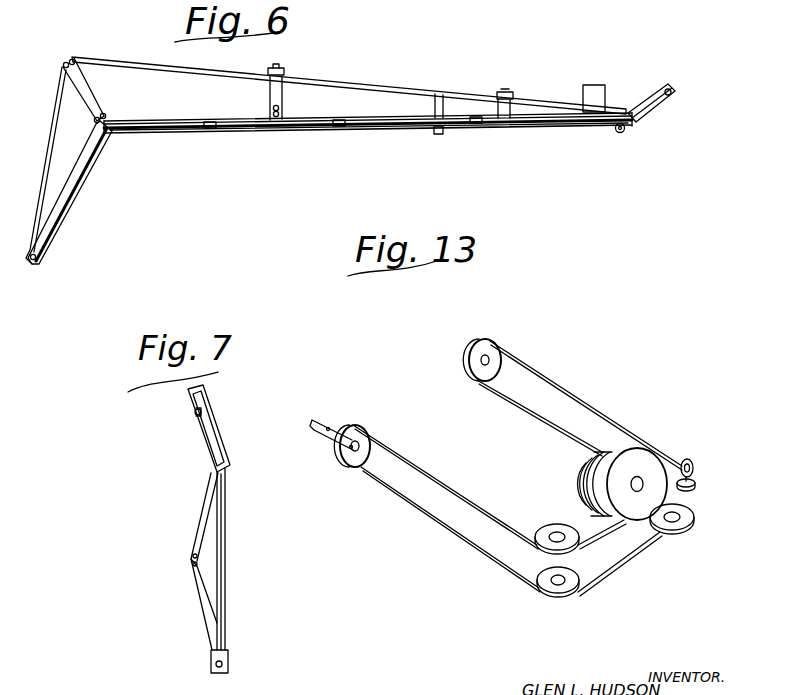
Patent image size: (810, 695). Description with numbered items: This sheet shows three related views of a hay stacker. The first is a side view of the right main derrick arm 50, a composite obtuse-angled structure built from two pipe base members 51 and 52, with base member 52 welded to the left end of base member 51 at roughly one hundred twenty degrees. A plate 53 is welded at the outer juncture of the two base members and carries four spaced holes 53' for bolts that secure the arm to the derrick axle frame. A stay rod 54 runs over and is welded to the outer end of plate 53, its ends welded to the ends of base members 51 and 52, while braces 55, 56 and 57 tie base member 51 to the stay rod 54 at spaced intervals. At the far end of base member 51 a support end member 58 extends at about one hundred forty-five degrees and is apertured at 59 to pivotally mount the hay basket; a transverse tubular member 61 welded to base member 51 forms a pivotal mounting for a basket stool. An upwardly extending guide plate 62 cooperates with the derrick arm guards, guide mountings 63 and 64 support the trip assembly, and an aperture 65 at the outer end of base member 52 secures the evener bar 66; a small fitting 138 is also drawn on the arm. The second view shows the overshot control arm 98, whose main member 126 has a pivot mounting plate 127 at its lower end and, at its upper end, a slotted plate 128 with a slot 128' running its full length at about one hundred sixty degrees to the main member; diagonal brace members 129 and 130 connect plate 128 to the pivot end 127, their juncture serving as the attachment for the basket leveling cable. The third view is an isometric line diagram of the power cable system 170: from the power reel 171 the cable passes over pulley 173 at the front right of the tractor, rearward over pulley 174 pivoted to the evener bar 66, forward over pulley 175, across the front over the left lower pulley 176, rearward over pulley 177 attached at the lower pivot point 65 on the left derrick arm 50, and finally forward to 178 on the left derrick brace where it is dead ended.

In FIG. 6, the main derrick arm 50 is at (186, 136).
In FIG. 6, the base member 51 is at (300, 128).
In FIG. 6, the base member 52 is at (72, 197).
In FIG. 6, the plate 53 is at (91, 89).
In FIG. 6, the spaced holes 53' is at (98, 72).
In FIG. 6, the stay rod 54 is at (98, 58).
In FIG. 6, the brace 55 is at (512, 104).
In FIG. 6, the brace 56 is at (444, 98).
In FIG. 6, the brace 57 is at (284, 94).
In FIG. 6, the support end member 58 is at (660, 100).
In FIG. 6, the aperture 59 is at (664, 90).
In FIG. 6, the tubular member 61 is at (616, 133).
In FIG. 6, the guide plate 62 is at (590, 86).
In FIG. 6, the guide mounting 63 is at (504, 91).
In FIG. 6, the guide mounting 64 is at (276, 66).
In FIG. 6, the aperture 65 is at (40, 259).
In FIG. 6, the bracket 138 is at (444, 132).
In FIG. 7, the overshot control arm 98 is at (229, 434).
In FIG. 7, the slotted plate 128 is at (170, 402).
In FIG. 7, the slot 128' is at (169, 419).
In FIG. 7, the main member 126 is at (220, 610).
In FIG. 7, the pivot mounting plate 127 is at (211, 652).
In FIG. 7, the diagonal brace member 129 is at (198, 586).
In FIG. 7, the diagonal brace member 130 is at (198, 531).
In FIG. 13, the power cable system 170 is at (589, 381).
In FIG. 13, the power reel 171 is at (644, 460).
In FIG. 13, the pulley 173 is at (548, 526).
In FIG. 13, the pulley 174 is at (352, 424).
In FIG. 13, the pulley 175 is at (552, 590).
In FIG. 13, the left lower pulley 176 is at (686, 520).
In FIG. 13, the pulley 177 is at (472, 350).
In FIG. 13, the dead end 178 is at (693, 466).
In FIG. 13, the evener bar 66 is at (324, 422).